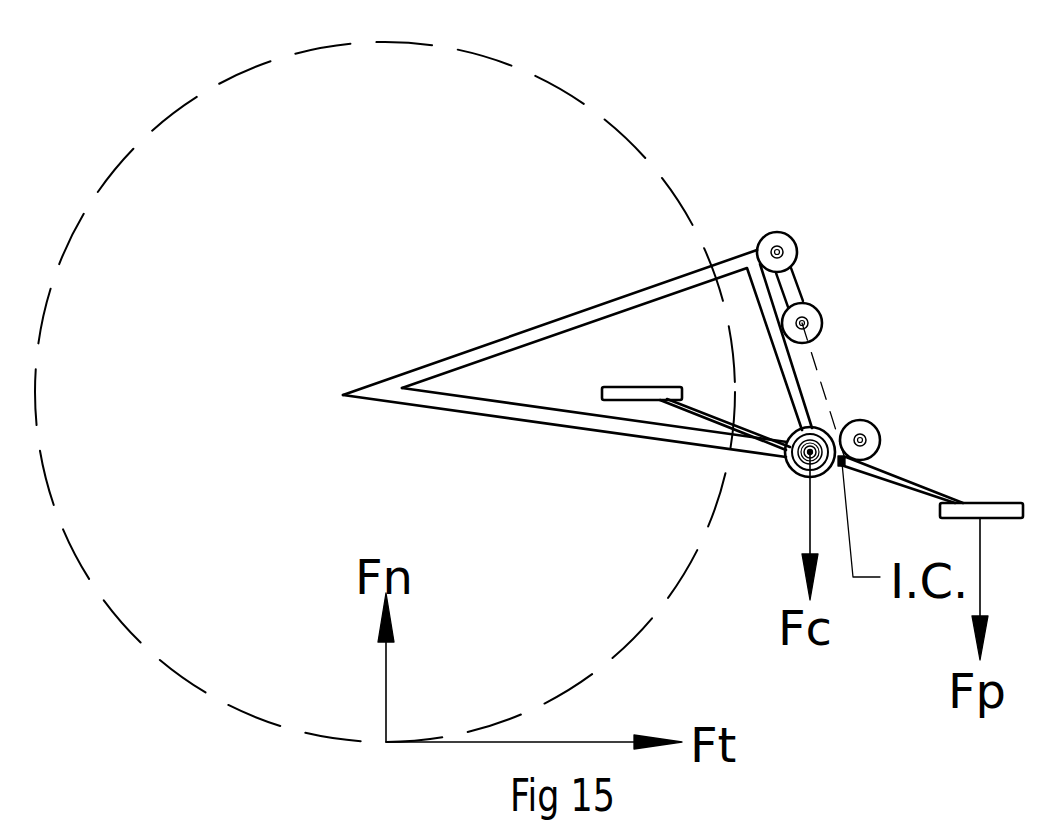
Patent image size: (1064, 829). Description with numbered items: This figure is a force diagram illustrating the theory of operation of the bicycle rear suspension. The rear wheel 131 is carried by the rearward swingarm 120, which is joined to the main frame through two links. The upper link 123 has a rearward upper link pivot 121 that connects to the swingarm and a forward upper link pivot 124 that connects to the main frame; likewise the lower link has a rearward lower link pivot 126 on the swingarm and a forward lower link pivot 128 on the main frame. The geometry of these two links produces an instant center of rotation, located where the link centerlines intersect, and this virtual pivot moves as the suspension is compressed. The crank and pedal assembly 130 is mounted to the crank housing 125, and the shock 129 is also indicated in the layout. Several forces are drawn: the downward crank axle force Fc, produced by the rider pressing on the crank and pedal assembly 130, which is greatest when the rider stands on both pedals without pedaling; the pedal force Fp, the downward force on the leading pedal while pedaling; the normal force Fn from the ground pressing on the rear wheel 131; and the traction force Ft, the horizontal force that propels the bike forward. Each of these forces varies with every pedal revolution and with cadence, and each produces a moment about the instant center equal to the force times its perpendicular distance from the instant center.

The rearward swingarm 120 is at (573, 314).
The rearward upper link pivot 121 is at (778, 250).
The upper link 123 is at (796, 282).
The forward upper link pivot 124 is at (804, 322).
The crank housing 125 is at (805, 455).
The rearward lower link pivot 126 is at (806, 455).
The forward lower link pivot 128 is at (862, 439).
The shock 129 is at (828, 428).
The crank and pedal assembly 130 is at (893, 475).
The rear wheel 131 is at (115, 615).